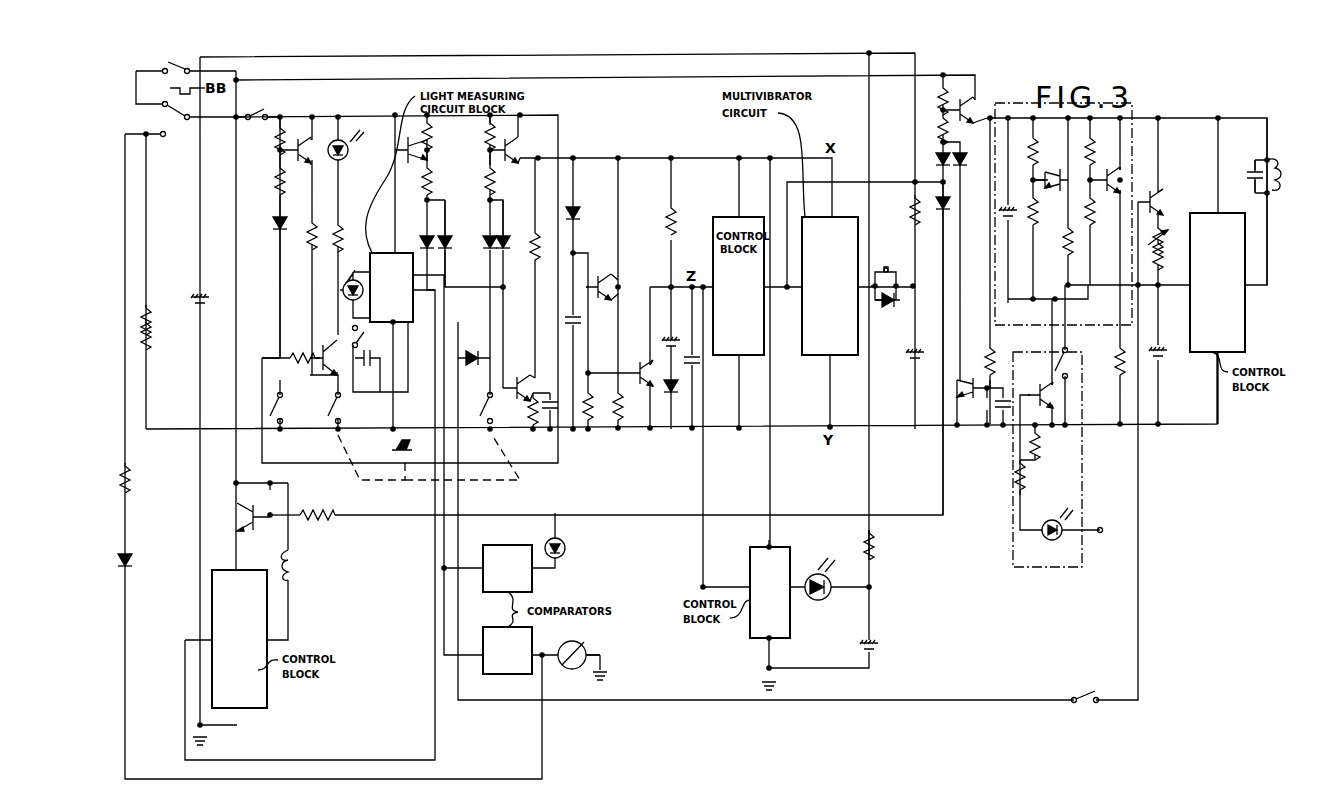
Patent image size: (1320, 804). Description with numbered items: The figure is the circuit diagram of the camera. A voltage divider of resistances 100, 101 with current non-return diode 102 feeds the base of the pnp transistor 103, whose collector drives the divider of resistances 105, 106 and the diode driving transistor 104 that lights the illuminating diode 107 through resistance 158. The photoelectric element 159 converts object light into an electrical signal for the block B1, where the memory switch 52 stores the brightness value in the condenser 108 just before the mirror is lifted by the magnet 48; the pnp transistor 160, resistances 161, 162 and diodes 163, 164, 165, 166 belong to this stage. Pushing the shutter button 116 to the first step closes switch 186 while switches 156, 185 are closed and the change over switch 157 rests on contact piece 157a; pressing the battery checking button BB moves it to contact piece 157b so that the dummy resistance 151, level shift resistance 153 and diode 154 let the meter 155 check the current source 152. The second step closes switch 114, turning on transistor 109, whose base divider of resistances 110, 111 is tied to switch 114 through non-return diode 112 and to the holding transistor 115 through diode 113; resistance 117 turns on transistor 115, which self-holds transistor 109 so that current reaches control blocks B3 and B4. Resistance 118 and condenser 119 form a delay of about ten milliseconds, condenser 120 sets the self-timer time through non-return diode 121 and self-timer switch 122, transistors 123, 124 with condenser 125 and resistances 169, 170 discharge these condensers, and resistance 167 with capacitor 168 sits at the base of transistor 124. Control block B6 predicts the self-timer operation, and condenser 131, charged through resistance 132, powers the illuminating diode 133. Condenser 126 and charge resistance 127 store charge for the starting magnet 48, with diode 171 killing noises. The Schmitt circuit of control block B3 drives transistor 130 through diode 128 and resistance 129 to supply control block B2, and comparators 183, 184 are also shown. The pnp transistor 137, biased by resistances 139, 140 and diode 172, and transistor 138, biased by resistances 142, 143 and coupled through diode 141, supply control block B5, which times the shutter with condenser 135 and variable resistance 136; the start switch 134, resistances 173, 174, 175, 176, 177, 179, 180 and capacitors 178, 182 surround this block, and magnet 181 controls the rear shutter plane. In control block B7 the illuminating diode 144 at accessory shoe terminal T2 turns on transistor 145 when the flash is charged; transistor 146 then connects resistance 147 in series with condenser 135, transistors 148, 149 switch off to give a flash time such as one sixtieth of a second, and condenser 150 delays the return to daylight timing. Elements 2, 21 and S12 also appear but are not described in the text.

The block B1 is at (391, 287).
The control block B2 is at (239, 639).
The control block B3 is at (738, 286).
The control block B4 is at (830, 286).
The control block B5 is at (1217, 282).
The control block B6 is at (770, 592).
The control block B7 is at (1115, 108).
The comparator 183 is at (507, 650).
The comparator 184 is at (507, 568).
The switch 156 is at (186, 61).
The change over switch 157 is at (166, 118).
The fixed contact piece 157a is at (168, 87).
The fixed contact piece 157b is at (174, 148).
The switch 185 is at (258, 107).
The resistance 100 is at (267, 136).
The resistance 101 is at (267, 182).
The current non-return diode 102 is at (267, 286).
The pnp transistor 103 is at (305, 151).
The voltage dividing resistance 105 is at (312, 232).
The illuminating diode 107 is at (352, 145).
The resistance 158 is at (354, 237).
The pnp transistor 160 is at (399, 150).
The resistance 161 is at (441, 132).
The resistance 162 is at (441, 175).
The diode 163 is at (415, 245).
The diode 164 is at (445, 250).
The voltage dividing resistance 110 is at (478, 140).
The voltage dividing resistance 111 is at (478, 180).
The non-return diode 112 is at (490, 236).
The non-return diode 113 is at (512, 225).
The transistor 109 is at (516, 139).
The resistance 117 is at (535, 255).
The diode 165 is at (587, 214).
The resistance 118 is at (685, 220).
The photoelectric element 159 is at (341, 294).
The diode driving transistor 104 is at (325, 346).
The voltage dividing resistance 106 is at (291, 362).
The memory switch 52 is at (381, 357).
The condenser 108 is at (370, 392).
The self-timer switch 122 is at (291, 408).
The switch 186 is at (326, 422).
The shutter button 116 is at (417, 449).
The diode 166 is at (474, 348).
The switch 114 is at (476, 408).
The transistor 115 is at (517, 383).
The resistance 167 is at (520, 410).
The capacitor 168 is at (547, 426).
The pnp transistor 123 is at (596, 287).
The condenser 125 is at (583, 320).
The resistance 169 is at (590, 420).
The resistance 170 is at (632, 405).
The npn transistor 124 is at (650, 374).
The condenser 120 is at (662, 343).
The non-return diode 121 is at (672, 392).
The condenser 119 is at (700, 363).
The magnet 48 is at (885, 269).
The diode 171 is at (881, 309).
The charge resistance 127 is at (904, 210).
The condenser 126 is at (906, 355).
The voltage dividing resistance 139 is at (932, 100).
The voltage dividing resistance 140 is at (932, 130).
The pnp transistor 137 is at (970, 106).
The diode 172 is at (935, 158).
The diode 141 is at (975, 160).
The diode 128 is at (952, 205).
The resistance 173 is at (1048, 162).
The resistance 174 is at (1048, 210).
The resistance 175 is at (1105, 162).
The resistance 176 is at (1105, 210).
The transistor 146 is at (1054, 181).
The transistor 148 is at (1121, 178).
The condenser 150 is at (1012, 218).
The resistance 147 is at (1056, 240).
The transistor 149 is at (1164, 202).
The variable resistance 136 is at (1170, 247).
The magnet 181 is at (1272, 160).
The capacitor 182 is at (1255, 182).
The voltage dividing resistance 142 is at (1004, 366).
The transistor 138 is at (968, 390).
The voltage dividing resistance 143 is at (995, 410).
The capacitor 178 is at (1002, 418).
The transistor 145 is at (1040, 384).
The start switch 134 is at (1077, 363).
The resistance 177 is at (1107, 360).
The condenser 135 is at (1168, 353).
The resistance 179 is at (1036, 445).
The resistance 180 is at (1034, 477).
The illuminating diode 144 is at (1056, 533).
The accessory shoe terminal T2 is at (1113, 533).
The switch S12 is at (1087, 690).
The level shift resistance 153 is at (138, 478).
The diode 154 is at (141, 561).
The current source 152 is at (214, 301).
The dummy resistance 151 is at (160, 327).
The transistor 130 is at (250, 517).
The resistance 129 is at (320, 515).
The coil 21 is at (298, 565).
The light emitting diode 2 is at (561, 548).
The meter 155 is at (571, 667).
The resistance 132 is at (883, 545).
The illuminating diode 133 is at (819, 590).
The condenser 131 is at (856, 646).
The battery checking button BB is at (213, 88).